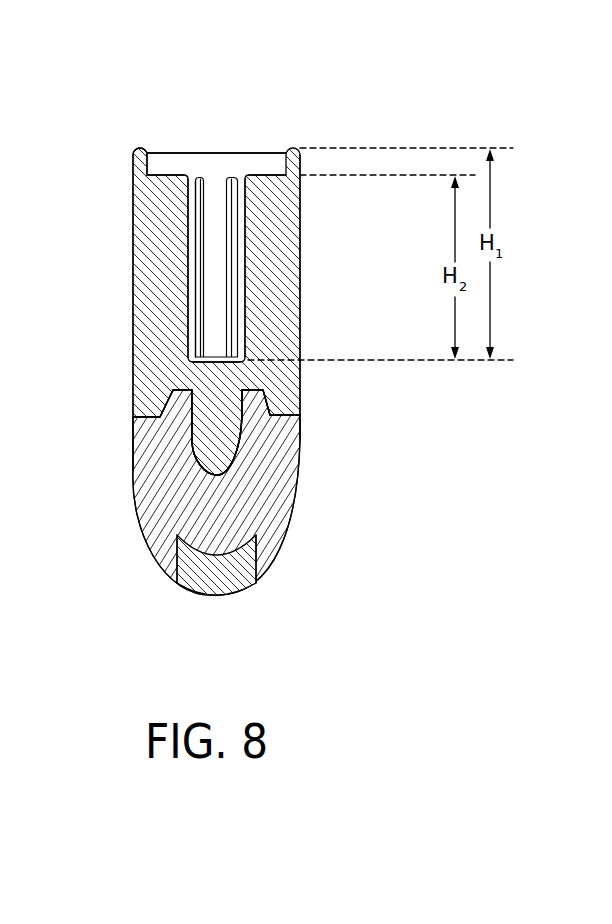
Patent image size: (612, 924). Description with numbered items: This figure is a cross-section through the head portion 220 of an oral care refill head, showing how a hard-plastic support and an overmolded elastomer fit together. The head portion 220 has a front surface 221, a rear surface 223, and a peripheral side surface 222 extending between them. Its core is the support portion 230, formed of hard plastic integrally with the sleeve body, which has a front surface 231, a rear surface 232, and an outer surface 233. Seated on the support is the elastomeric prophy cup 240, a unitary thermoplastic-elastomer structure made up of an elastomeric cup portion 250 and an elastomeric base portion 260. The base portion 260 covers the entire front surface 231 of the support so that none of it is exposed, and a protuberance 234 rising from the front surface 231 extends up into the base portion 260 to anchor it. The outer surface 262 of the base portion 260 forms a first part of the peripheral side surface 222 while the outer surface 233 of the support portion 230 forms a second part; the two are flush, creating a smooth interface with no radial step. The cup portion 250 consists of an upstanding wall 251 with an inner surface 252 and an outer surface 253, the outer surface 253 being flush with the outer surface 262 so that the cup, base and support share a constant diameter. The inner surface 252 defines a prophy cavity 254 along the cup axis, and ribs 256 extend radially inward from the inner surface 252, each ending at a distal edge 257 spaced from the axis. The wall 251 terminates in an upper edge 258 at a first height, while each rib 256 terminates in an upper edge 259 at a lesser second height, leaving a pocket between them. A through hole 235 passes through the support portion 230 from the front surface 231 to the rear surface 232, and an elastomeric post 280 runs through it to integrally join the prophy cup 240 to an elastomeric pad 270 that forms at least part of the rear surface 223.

The head portion 220 is at (321, 440).
The front surface 221 is at (215, 358).
The peripheral side surface 222 is at (302, 432).
The rear surface 223 is at (178, 573).
The support portion 230 is at (270, 490).
The front surface 231 is at (284, 413).
The rear surface 232 is at (263, 567).
The outer surface 233 is at (134, 478).
The protuberance 234 is at (252, 402).
The through hole 235 is at (214, 422).
The elastomeric prophy cup 240 is at (304, 343).
The elastomeric cup portion 250 is at (284, 268).
The upstanding wall 251 is at (275, 218).
The inner surface 252 is at (150, 160).
The outer surface 253 is at (133, 218).
The prophy cavity 254 is at (215, 196).
The ribs 256 is at (163, 203).
The distal edge 257 is at (195, 255).
The upper edge 258 is at (138, 150).
The upper edge 259 is at (166, 174).
The elastomeric base portion 260 is at (157, 395).
The outer surface 262 is at (135, 412).
The elastomeric pad 270 is at (221, 568).
The elastomeric post 280 is at (213, 450).